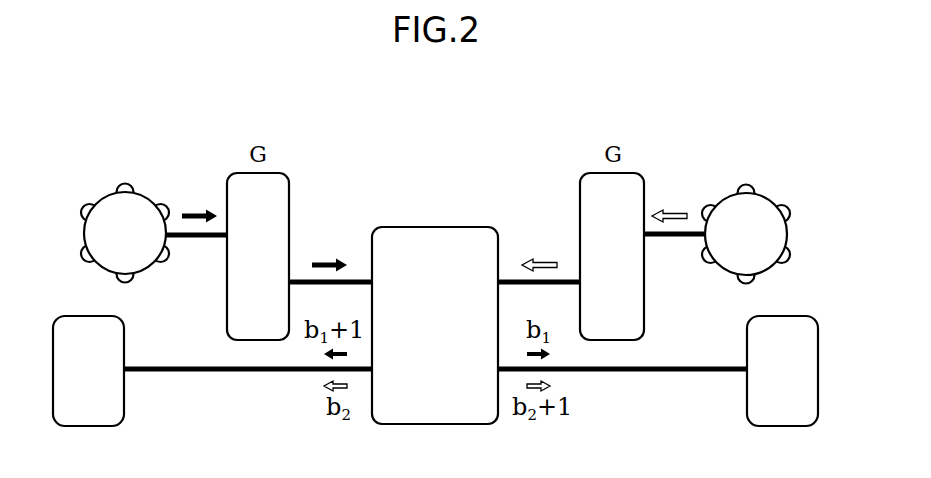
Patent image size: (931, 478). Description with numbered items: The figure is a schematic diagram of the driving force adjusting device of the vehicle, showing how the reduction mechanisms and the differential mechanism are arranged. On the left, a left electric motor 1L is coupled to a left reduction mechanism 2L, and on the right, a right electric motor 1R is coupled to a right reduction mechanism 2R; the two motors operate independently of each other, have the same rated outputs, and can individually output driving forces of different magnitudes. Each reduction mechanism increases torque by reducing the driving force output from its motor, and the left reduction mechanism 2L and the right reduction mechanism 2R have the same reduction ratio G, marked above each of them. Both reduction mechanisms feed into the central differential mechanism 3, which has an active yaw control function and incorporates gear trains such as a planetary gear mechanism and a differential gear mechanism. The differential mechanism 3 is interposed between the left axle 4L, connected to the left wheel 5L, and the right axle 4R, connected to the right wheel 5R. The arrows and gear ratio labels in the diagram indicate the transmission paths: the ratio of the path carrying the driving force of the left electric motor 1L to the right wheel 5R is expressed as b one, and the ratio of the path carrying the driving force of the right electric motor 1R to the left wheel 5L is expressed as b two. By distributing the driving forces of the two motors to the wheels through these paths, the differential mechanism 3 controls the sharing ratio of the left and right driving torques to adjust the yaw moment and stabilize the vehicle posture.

The left electric motor 1L is at (105, 248).
The right electric motor 1R is at (767, 249).
The left reduction mechanism 2L is at (242, 274).
The right reduction mechanism 2R is at (594, 274).
The differential mechanism 3 is at (425, 347).
The left axle 4L is at (178, 372).
The right axle 4R is at (690, 372).
The left wheel 5L is at (70, 388).
The right wheel 5R is at (803, 388).